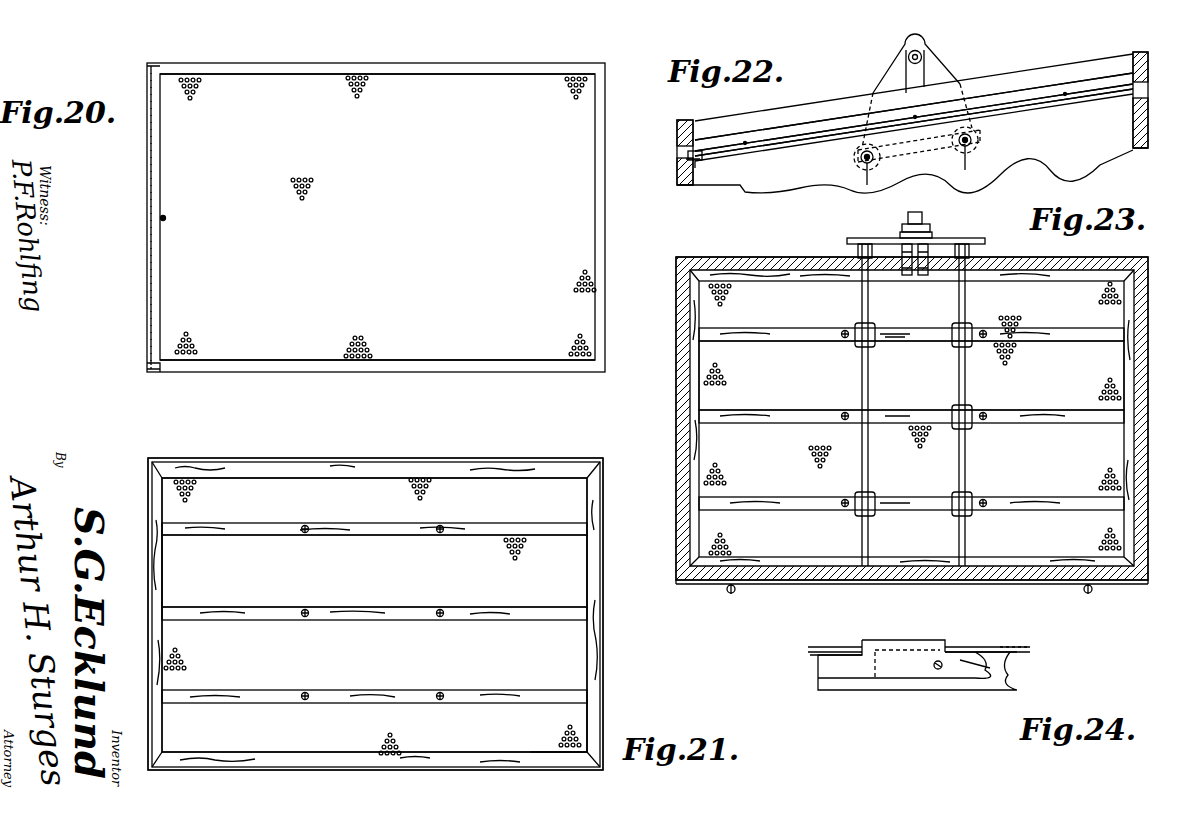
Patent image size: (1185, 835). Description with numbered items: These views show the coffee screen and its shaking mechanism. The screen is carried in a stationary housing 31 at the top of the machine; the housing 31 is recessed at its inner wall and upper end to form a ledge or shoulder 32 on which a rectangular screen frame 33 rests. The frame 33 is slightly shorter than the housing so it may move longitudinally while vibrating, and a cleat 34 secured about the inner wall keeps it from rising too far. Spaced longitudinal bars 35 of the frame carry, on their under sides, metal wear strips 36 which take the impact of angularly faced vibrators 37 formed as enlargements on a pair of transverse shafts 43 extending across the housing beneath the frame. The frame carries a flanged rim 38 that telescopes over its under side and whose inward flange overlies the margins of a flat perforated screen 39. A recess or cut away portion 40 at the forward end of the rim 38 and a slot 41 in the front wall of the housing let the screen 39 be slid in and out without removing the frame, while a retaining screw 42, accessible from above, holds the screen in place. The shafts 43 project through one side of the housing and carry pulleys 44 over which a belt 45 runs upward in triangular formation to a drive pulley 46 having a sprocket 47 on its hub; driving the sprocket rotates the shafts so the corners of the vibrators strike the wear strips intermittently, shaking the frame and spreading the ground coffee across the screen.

In FIG. 22, the housing 31 is at (1146, 133).
In FIG. 23, the housing 31 is at (692, 262).
In FIG. 22, the ledge or shoulder 32 is at (1148, 106).
In FIG. 21, the screen frame 33 is at (274, 467).
In FIG. 22, the screen frame 33 is at (1047, 106).
In FIG. 23, the screen frame 33 is at (1041, 559).
In FIG. 24, the screen frame 33 is at (987, 690).
In FIG. 22, the cleat 34 is at (1080, 86).
In FIG. 21, the longitudinal bars 35 is at (498, 690).
In FIG. 23, the longitudinal bars 35 is at (760, 505).
In FIG. 21, the wear strips 36 is at (379, 690).
In FIG. 22, the wear strips 36 is at (915, 133).
In FIG. 23, the wear strips 36 is at (917, 334).
In FIG. 22, the vibrators 37 is at (860, 152).
In FIG. 23, the vibrators 37 is at (958, 338).
In FIG. 20, the flanged rim 38 is at (491, 64).
In FIG. 21, the flanged rim 38 is at (512, 462).
In FIG. 22, the flanged rim 38 is at (1103, 100).
In FIG. 24, the flanged rim 38 is at (906, 665).
In FIG. 20, the screen 39 is at (172, 298).
In FIG. 21, the screen 39 is at (570, 735).
In FIG. 22, the screen 39 is at (696, 150).
In FIG. 24, the screen 39 is at (1010, 648).
In FIG. 20, the recess or cut away portion 40 is at (152, 374).
In FIG. 22, the recess or cut away portion 40 is at (698, 170).
In FIG. 24, the recess or cut away portion 40 is at (835, 658).
In FIG. 22, the slot 41 is at (690, 135).
In FIG. 20, the retaining screw 42 is at (161, 217).
In FIG. 24, the retaining screw 42 is at (868, 642).
In FIG. 22, the transverse shafts 43 is at (867, 168).
In FIG. 23, the transverse shafts 43 is at (861, 304).
In FIG. 22, the pulleys 44 is at (919, 146).
In FIG. 23, the pulleys 44 is at (855, 238).
In FIG. 22, the belt 45 is at (885, 75).
In FIG. 23, the belt 45 is at (905, 240).
In FIG. 22, the drive pulley 46 is at (928, 45).
In FIG. 23, the drive pulley 46 is at (931, 230).
In FIG. 23, the sprocket 47 is at (920, 214).